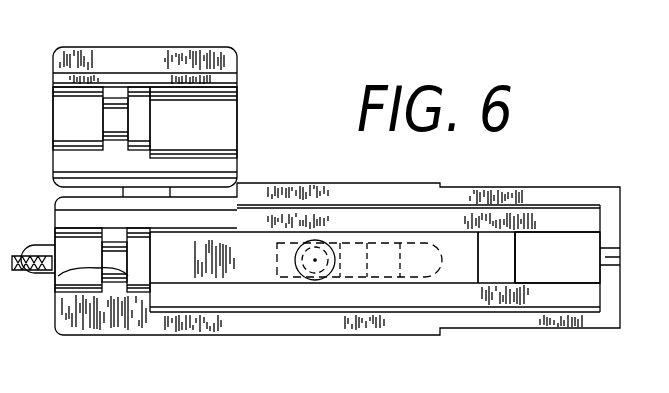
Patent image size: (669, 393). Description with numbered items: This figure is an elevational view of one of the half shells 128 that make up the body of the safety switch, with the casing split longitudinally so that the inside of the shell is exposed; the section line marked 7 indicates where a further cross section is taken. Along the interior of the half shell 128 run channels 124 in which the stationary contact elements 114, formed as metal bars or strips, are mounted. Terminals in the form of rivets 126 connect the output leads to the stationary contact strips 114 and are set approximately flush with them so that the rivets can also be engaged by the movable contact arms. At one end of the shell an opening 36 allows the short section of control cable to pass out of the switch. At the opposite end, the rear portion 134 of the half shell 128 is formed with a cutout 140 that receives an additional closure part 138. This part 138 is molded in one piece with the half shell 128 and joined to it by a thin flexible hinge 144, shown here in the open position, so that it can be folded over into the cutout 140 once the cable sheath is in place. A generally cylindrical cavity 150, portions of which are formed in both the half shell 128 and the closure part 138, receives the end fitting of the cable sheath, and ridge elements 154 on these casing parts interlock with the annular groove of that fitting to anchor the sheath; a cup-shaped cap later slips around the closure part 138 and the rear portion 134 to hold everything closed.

The section line 7- 7 is at (110, 22).
The opening 36 is at (612, 258).
The stationary contact elements 114 is at (500, 247).
The channels 124 is at (530, 247).
The rivets 126 is at (315, 237).
The half shell 128 is at (505, 332).
The rear portion 134 is at (72, 333).
The additional part 138 is at (235, 55).
The cutout 140 is at (215, 215).
The hinge 144 is at (155, 190).
The cavity 150 is at (133, 125).
The ridge elements 154 is at (118, 93).